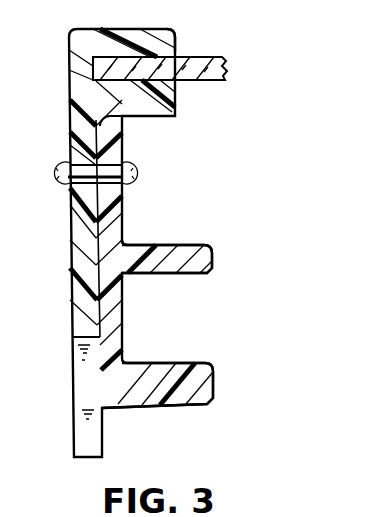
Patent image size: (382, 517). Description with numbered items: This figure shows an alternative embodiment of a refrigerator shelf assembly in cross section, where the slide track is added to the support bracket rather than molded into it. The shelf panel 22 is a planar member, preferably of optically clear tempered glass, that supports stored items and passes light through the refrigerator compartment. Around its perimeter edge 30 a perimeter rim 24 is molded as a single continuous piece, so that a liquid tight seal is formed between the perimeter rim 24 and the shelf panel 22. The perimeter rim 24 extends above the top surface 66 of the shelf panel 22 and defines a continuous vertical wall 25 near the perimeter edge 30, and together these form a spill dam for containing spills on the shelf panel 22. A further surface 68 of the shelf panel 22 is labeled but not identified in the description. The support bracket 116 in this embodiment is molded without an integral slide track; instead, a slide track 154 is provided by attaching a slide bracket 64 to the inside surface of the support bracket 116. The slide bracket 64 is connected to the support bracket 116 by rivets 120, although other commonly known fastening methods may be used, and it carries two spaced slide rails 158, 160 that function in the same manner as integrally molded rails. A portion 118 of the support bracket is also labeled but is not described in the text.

The shelf panel 22 is at (226, 66).
The perimeter rim 24 is at (124, 42).
The continuous vertical wall 25 is at (178, 50).
The perimeter edge 30 is at (93, 67).
The slide bracket 64 is at (133, 245).
The top surface 66 is at (203, 57).
The lower surface of blade 68 is at (186, 82).
The support bracket 116 is at (83, 220).
The second leg portion 118 is at (70, 246).
The rivets 120 is at (57, 175).
The slide track 154 is at (236, 311).
The slide rail 158 is at (179, 246).
The slide rail 160 is at (158, 364).